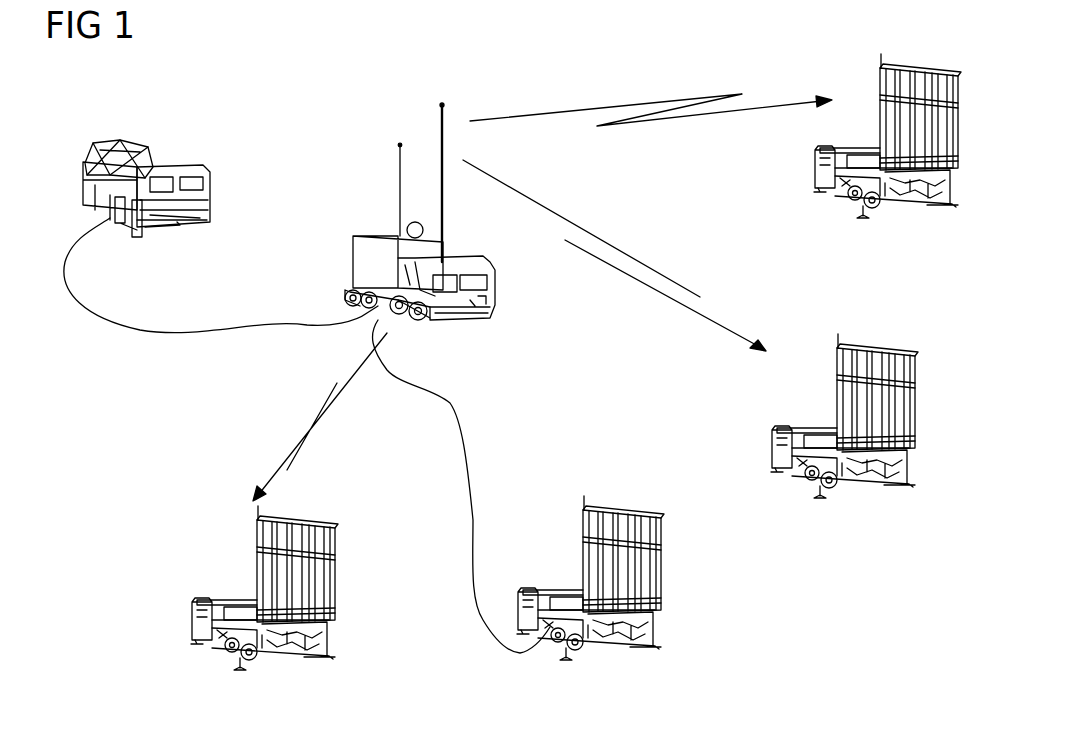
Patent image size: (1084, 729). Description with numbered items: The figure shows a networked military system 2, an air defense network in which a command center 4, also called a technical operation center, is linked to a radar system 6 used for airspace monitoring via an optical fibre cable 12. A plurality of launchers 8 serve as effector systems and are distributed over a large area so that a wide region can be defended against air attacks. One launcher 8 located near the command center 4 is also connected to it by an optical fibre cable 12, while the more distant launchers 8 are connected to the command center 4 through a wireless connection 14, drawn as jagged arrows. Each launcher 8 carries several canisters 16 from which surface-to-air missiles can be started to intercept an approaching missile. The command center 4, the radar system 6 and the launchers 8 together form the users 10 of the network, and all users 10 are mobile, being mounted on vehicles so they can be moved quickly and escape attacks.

The networked military system 2 is at (356, 104).
The command center 4 is at (350, 258).
The radar system 6 is at (148, 157).
The launcher 8 is at (815, 162).
The user 10 is at (222, 192).
The optical fibre cable 12 is at (162, 337).
The wireless connection 14 is at (637, 100).
The canister 16 is at (664, 561).